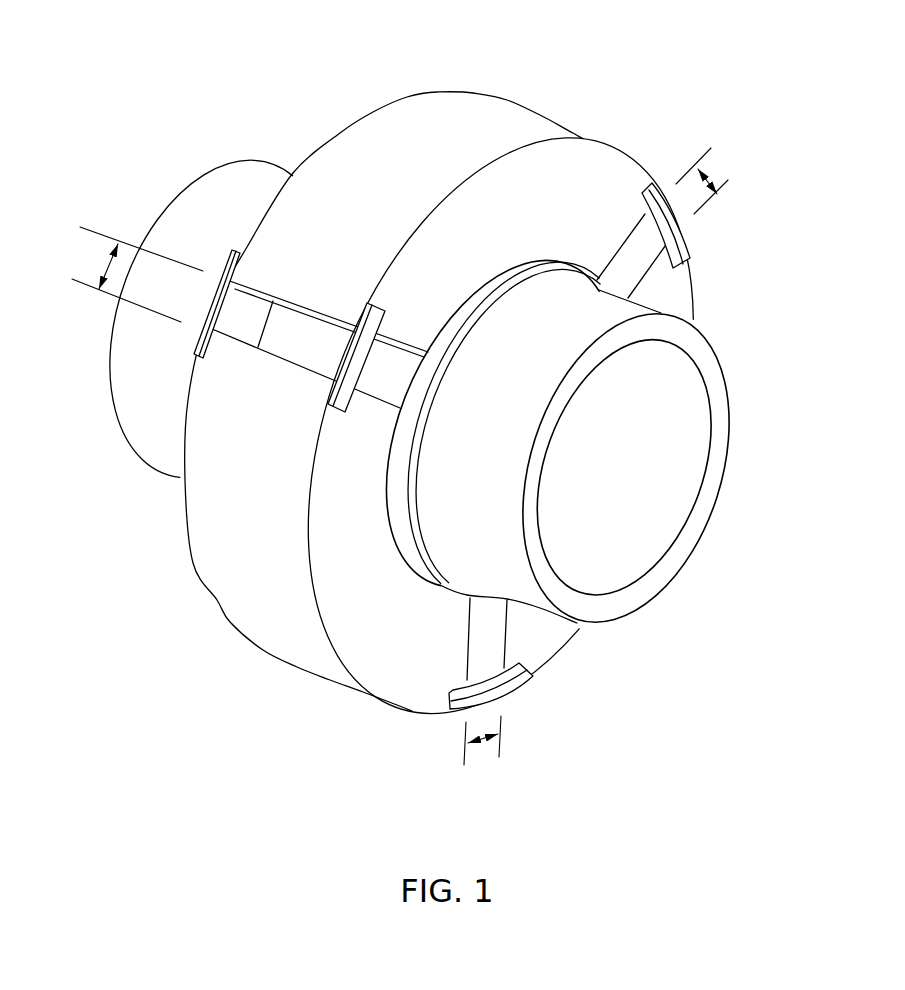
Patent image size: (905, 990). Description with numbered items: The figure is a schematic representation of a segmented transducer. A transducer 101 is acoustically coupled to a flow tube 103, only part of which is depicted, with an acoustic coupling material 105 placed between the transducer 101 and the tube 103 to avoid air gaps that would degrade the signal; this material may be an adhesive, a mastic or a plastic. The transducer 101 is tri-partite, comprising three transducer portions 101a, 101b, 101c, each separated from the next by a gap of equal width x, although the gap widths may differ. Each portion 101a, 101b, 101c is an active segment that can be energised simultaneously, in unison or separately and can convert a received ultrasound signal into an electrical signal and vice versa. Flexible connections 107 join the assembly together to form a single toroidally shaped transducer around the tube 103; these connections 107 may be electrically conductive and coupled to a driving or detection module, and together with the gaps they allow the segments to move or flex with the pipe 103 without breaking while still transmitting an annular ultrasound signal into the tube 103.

The transducer 101 is at (432, 402).
The transducer portion 101a is at (490, 86).
The transducer portion 101b is at (192, 630).
The transducer portion 101c is at (583, 645).
The flow tube 103 is at (198, 184).
The acoustic coupling material 105 is at (397, 377).
The flexible connections 107 is at (342, 356).